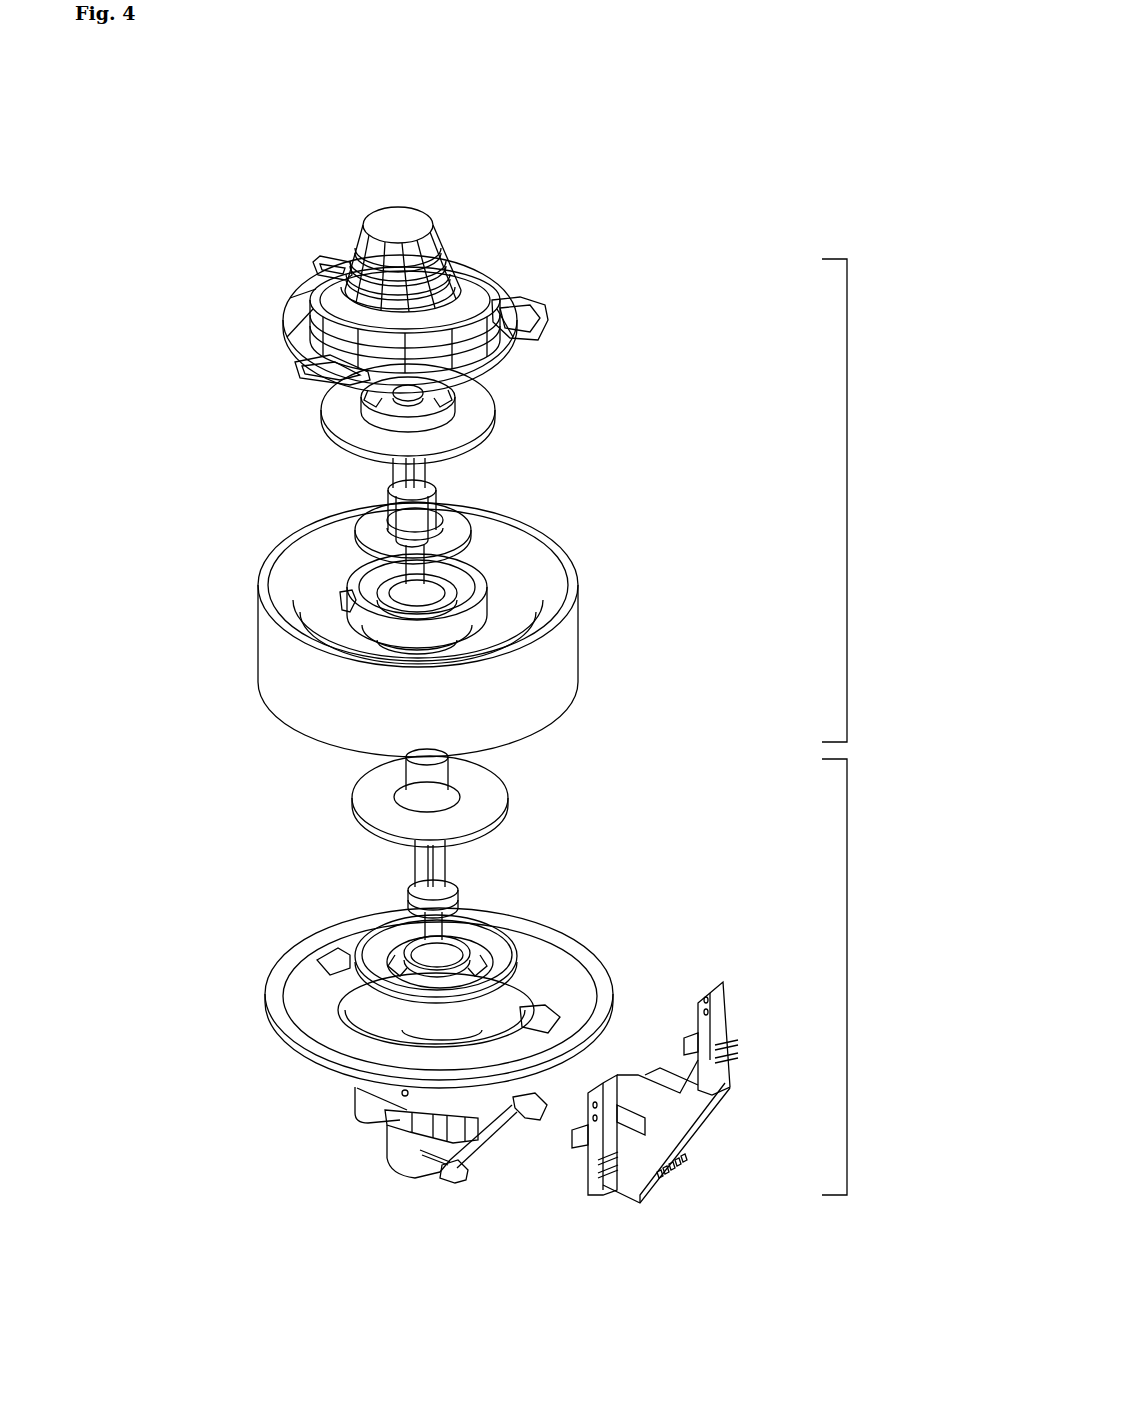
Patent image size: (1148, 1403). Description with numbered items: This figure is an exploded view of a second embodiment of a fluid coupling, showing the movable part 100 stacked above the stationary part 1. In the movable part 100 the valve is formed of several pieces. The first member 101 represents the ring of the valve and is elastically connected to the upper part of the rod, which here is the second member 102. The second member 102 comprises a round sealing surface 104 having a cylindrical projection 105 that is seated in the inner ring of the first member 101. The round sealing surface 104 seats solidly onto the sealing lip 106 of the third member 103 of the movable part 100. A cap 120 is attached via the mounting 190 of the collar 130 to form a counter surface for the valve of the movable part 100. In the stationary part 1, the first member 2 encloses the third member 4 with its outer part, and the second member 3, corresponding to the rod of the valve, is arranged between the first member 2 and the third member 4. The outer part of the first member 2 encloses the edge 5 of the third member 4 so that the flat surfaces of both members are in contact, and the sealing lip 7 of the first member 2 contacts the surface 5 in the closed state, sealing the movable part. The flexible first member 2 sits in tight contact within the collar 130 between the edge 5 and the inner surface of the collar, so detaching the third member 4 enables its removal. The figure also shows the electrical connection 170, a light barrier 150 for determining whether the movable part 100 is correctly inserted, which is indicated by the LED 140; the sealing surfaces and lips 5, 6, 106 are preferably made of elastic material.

The movable part 100 is at (847, 516).
The stationary part 1 is at (847, 975).
The cap 120 is at (493, 271).
The first member of the movable part 101 is at (500, 400).
The second member of the movable part 102 is at (462, 478).
The third member of the movable part 103 is at (495, 555).
The round sealing surface 104 is at (390, 522).
The cylindrical projection 105 is at (355, 527).
The sealing lip 106 is at (470, 574).
The collar 130 is at (578, 642).
The mounting 190 is at (352, 598).
The third member of the stationary part 4 is at (512, 775).
The edge of the third member 5 is at (380, 803).
The second member of the stationary part 3 is at (457, 897).
The first member of the stationary part 2 is at (507, 933).
The sealing lip 7 is at (487, 950).
The sealing lip 6 is at (375, 967).
The LED 140 is at (697, 1038).
The light barrier 150 is at (647, 1083).
The electrical connection 170 is at (677, 1172).